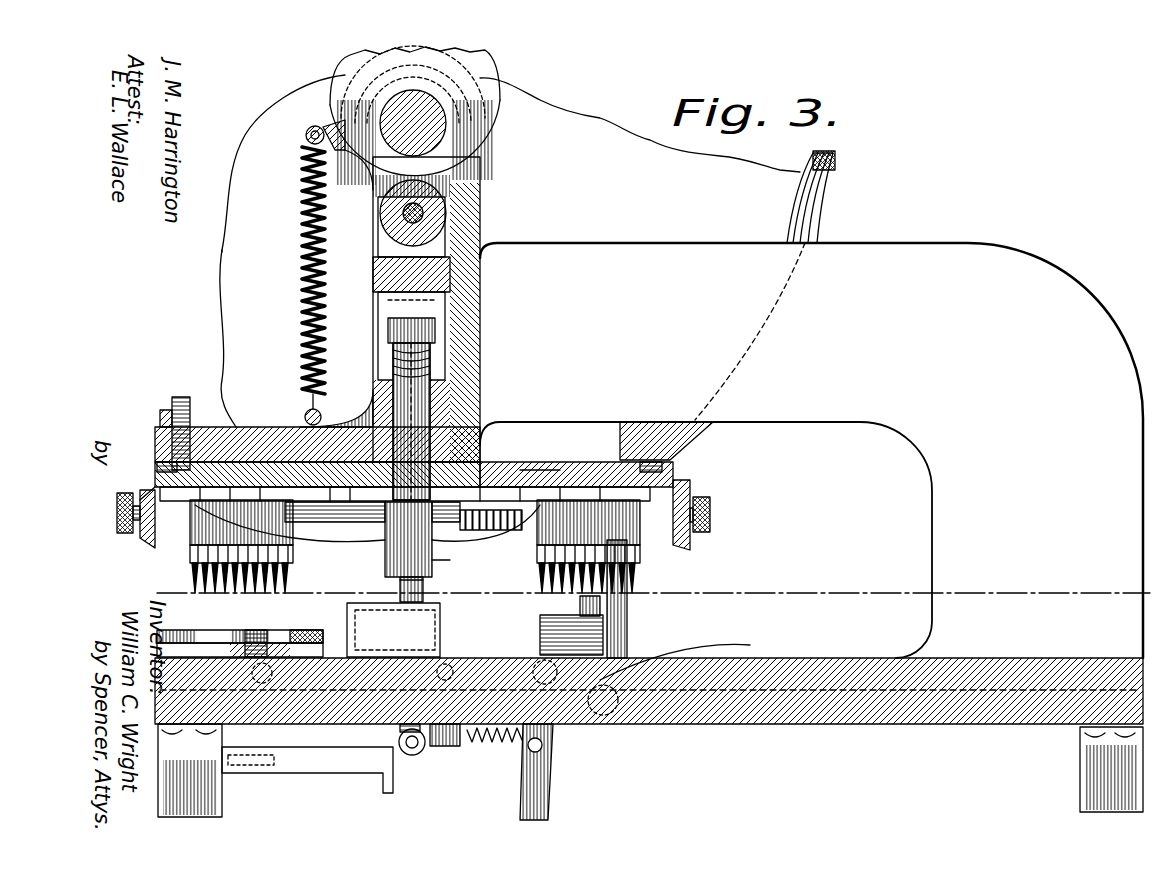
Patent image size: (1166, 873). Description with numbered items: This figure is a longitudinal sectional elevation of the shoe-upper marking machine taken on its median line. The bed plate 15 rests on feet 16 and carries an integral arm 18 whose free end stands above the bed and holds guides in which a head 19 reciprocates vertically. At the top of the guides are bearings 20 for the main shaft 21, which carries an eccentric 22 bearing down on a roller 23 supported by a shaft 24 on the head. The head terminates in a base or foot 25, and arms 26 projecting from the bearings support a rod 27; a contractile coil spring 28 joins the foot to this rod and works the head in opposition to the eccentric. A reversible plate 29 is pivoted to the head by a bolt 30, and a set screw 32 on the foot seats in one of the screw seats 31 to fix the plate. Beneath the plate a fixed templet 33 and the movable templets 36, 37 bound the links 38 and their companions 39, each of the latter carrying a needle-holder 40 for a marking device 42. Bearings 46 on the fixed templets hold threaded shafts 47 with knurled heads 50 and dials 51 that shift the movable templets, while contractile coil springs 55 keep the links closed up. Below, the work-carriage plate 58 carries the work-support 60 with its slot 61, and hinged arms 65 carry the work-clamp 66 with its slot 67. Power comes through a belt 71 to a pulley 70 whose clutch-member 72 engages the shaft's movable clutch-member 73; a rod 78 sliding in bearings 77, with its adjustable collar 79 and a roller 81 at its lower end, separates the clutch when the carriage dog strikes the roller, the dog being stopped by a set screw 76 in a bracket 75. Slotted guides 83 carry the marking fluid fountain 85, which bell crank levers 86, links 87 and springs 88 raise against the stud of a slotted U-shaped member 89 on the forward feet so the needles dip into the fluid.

The bed plate 15 is at (768, 726).
The feet 16 is at (200, 797).
The arm 18 is at (653, 450).
The head 19 is at (390, 265).
The bearing 20 is at (470, 183).
The shaft 21 is at (425, 105).
The eccentric 22 is at (340, 75).
The roller 23 is at (450, 215).
The shaft 24 is at (480, 240).
The base or foot 25 is at (250, 425).
The arms 26 is at (303, 138).
The rod 27 is at (310, 130).
The contractile coil spring 28 is at (300, 232).
The reversible plate 29 is at (552, 450).
The bolt 30 is at (440, 405).
The screw seat 31 is at (158, 468).
The set screw 32 is at (160, 420).
The templet 33 is at (615, 455).
The movable templet 36 is at (490, 530).
The movable templet 37 is at (350, 540).
The links 38 is at (355, 395).
The links 39 is at (300, 545).
The needle-holder 40 is at (182, 398).
The marking device 42 is at (195, 560).
The bearing 46 is at (132, 535).
The threaded shaft 47 is at (498, 487).
The knurled head 50 is at (117, 512).
The dial 51 is at (140, 540).
The contractile coil springs 55 is at (462, 545).
The plate 58 is at (603, 630).
The work-support 60 is at (290, 632).
The slot 61 is at (300, 695).
The arm 65 is at (340, 700).
The work-clamp 66 is at (260, 632).
The slot 67 is at (335, 630).
The pulley 70 is at (693, 201).
The belt 71 is at (836, 162).
The clutch-member 72 is at (485, 110).
The clutch-member 73 is at (430, 62).
The bracket 75 is at (408, 760).
The set screw 76 is at (368, 740).
The bearings 77 is at (440, 790).
The rod 78 is at (400, 585).
The adjustable collar 79 is at (455, 428).
The roller 81 is at (462, 740).
The slotted guides 83 is at (627, 603).
The marking fluid fountain 85 is at (605, 630).
The bell crank levers 86 is at (548, 786).
The links 87 is at (650, 642).
The springs 88 is at (505, 755).
The slotted U-shaped member 89 is at (290, 780).